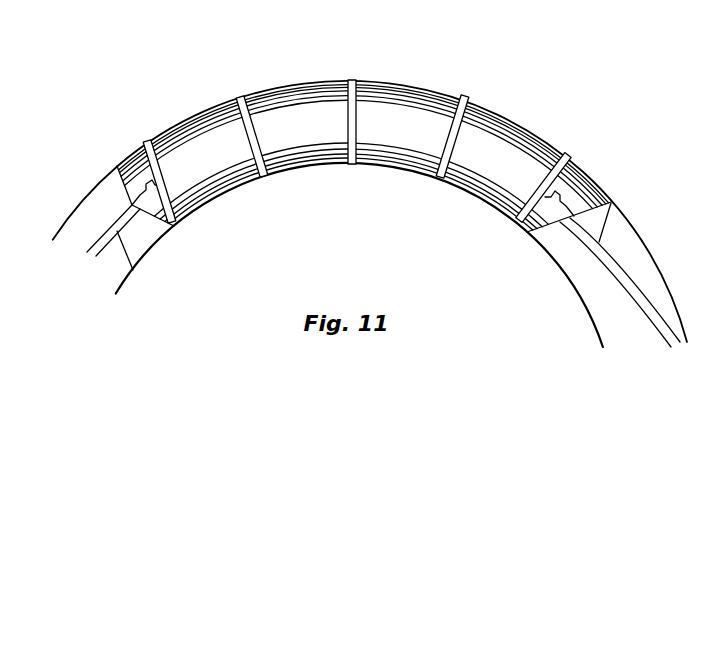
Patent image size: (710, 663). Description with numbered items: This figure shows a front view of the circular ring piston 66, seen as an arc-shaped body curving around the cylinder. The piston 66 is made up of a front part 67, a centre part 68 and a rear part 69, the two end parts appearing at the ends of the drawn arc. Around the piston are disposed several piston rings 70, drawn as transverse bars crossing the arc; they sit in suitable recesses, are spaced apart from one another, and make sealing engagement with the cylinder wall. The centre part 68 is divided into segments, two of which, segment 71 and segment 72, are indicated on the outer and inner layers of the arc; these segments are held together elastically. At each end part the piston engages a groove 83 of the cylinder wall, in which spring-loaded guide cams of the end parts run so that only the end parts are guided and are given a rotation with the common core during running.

The piston 66 is at (412, 86).
The front part 67 is at (138, 152).
The centre part 68 is at (387, 166).
The rear part 69 is at (583, 170).
The piston rings 70 is at (146, 140).
The segment 71 is at (294, 92).
The segment 72 is at (288, 157).
The groove 83 is at (133, 270).